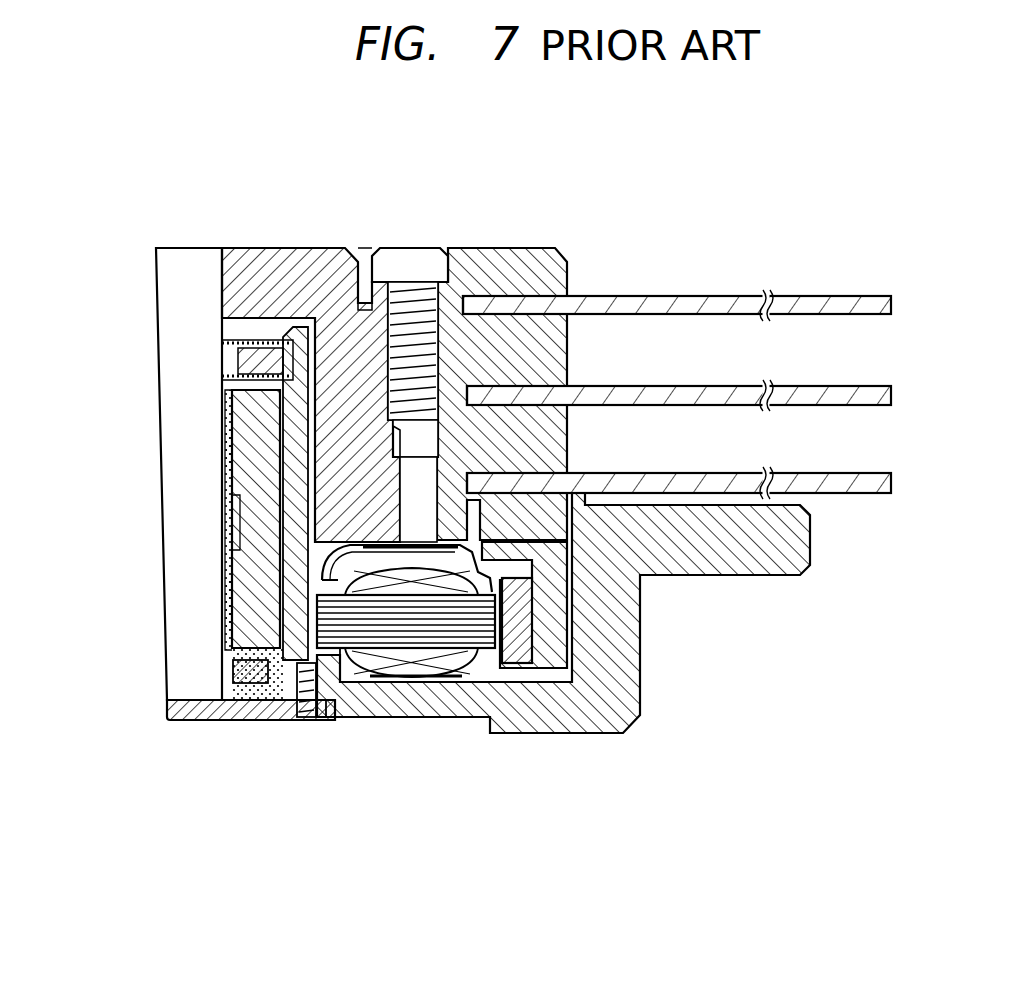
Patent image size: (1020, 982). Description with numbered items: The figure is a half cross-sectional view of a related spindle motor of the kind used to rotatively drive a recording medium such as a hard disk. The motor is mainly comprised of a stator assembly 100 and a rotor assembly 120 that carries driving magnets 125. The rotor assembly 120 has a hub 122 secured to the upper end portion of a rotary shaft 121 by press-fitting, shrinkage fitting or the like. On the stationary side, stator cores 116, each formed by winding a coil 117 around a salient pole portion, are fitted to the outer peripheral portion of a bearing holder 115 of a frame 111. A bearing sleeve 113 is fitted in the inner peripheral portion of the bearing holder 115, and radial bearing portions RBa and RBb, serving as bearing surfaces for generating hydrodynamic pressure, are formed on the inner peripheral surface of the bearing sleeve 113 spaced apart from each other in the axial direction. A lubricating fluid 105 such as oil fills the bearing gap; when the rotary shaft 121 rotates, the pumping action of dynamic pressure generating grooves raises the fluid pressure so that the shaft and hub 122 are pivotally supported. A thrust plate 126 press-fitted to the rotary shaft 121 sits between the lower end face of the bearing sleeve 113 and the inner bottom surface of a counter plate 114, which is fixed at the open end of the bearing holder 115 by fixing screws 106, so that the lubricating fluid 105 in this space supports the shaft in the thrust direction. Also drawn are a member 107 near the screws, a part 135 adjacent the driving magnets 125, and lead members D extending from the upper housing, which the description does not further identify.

The stator assembly 100 is at (645, 733).
The lubricating fluid 105 is at (232, 510).
The fixing screws 106 is at (305, 722).
The spacer 107 is at (333, 722).
The frame 111 is at (548, 735).
The bearing sleeve 113 is at (237, 642).
The counter plate 114 is at (213, 722).
The bearing holder 115 is at (287, 408).
The stator cores 116 is at (368, 628).
The coil 117 is at (430, 684).
The rotor assembly 120 is at (352, 245).
The rotary shaft 121 is at (175, 297).
The hub 122 is at (274, 275).
The driving magnets 125 is at (523, 618).
The thrust plate 126 is at (258, 690).
The holder 135 is at (553, 645).
The lead terminals D is at (700, 298).
The radial bearing portion RBa is at (230, 447).
The radial bearing portion RBb is at (230, 605).